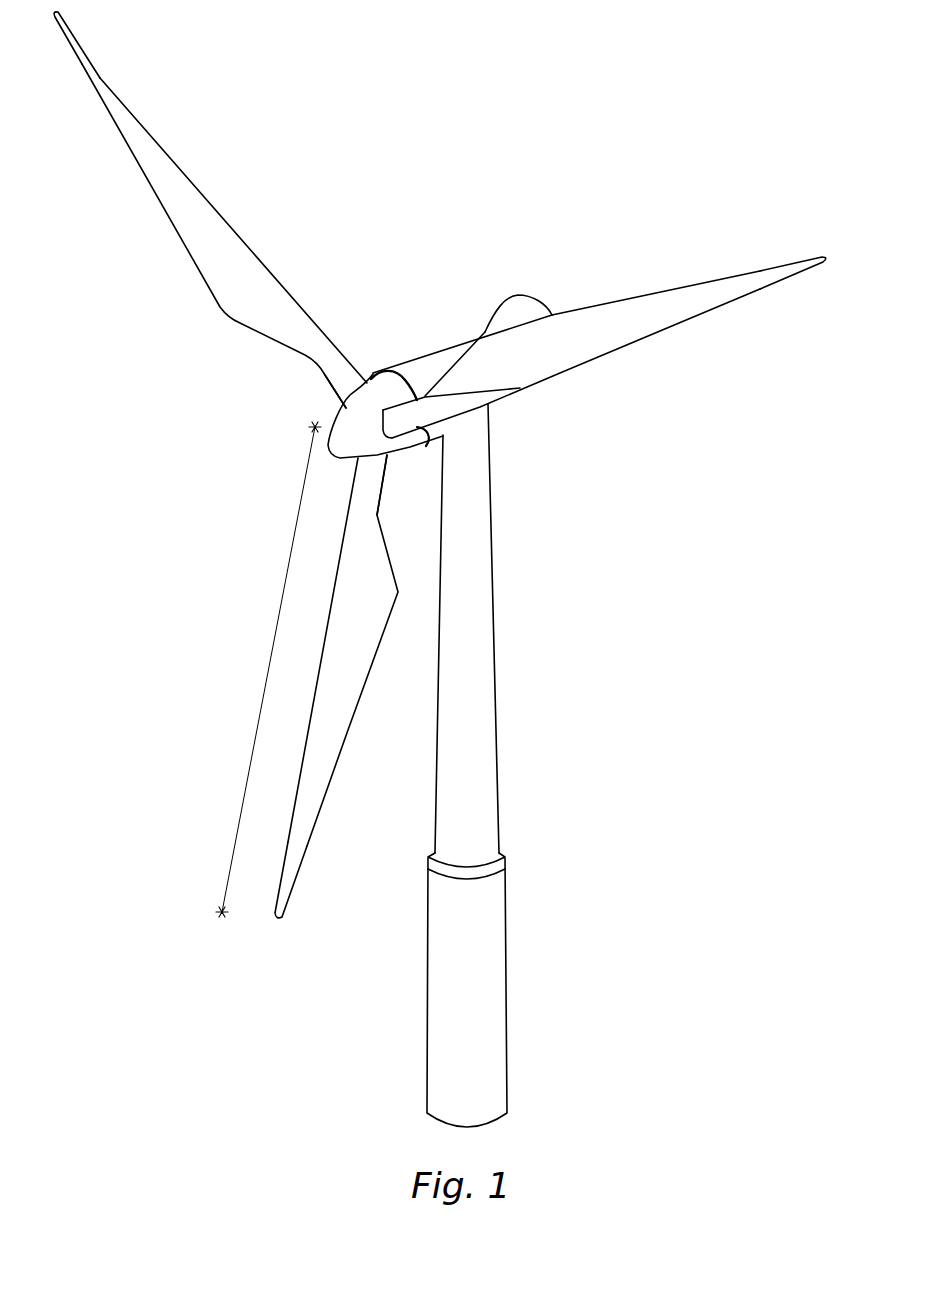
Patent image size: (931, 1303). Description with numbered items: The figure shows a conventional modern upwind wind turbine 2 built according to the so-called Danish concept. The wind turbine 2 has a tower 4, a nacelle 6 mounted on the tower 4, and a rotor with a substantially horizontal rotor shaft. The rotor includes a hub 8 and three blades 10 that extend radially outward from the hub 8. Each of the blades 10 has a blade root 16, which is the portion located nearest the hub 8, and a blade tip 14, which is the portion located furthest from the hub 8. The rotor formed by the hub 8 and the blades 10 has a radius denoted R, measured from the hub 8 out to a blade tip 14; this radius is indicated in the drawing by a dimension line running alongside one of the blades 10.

The wind turbine 2 is at (592, 707).
The tower 4 is at (482, 634).
The nacelle 6 is at (430, 354).
The hub 8 is at (340, 428).
The blade 10 is at (240, 295).
The blade tip 14 is at (95, 67).
The blade root 16 is at (345, 402).